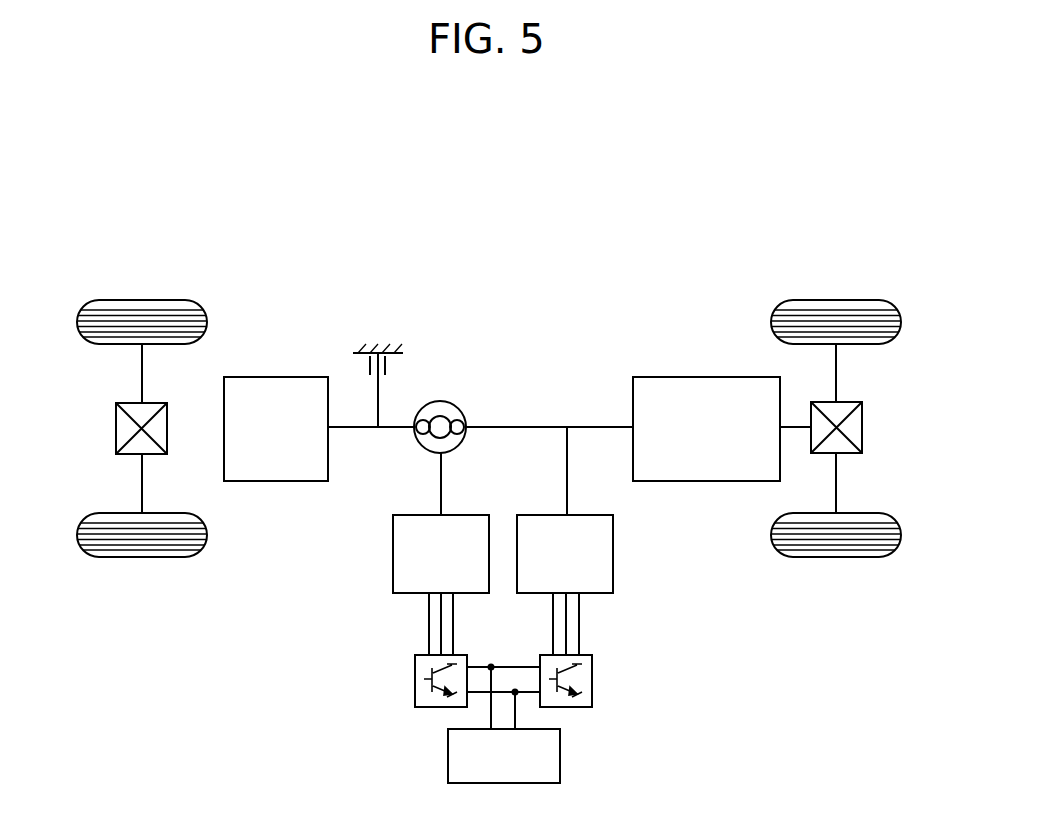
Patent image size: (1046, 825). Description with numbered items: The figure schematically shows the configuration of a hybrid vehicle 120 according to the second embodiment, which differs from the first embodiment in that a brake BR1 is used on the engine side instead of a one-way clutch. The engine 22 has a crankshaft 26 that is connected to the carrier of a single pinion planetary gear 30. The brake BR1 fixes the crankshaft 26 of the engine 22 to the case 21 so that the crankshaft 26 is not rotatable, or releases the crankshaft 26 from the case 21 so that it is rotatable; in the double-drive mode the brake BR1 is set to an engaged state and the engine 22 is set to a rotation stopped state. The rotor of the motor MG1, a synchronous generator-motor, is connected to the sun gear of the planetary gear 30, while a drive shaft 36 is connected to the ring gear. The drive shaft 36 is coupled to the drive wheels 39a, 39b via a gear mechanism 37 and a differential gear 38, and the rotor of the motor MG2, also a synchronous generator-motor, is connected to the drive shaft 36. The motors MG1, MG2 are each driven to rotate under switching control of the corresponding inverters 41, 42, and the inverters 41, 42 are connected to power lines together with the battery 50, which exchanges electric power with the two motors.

The hybrid vehicle 120 is at (558, 280).
The case 21 is at (356, 366).
The brake BR1 is at (388, 368).
The engine 22 is at (277, 377).
The crankshaft 26 is at (357, 429).
The planetary gear 30 is at (440, 401).
The drive shaft 36 is at (590, 427).
The gear mechanism 37 is at (723, 377).
The differential gear 38 is at (848, 402).
The drive wheel 39a is at (836, 300).
The drive wheel 39b is at (834, 557).
The motor MG1 is at (465, 515).
The motor MG2 is at (589, 515).
The inverter 41 is at (462, 654).
The inverter 42 is at (590, 654).
The battery 50 is at (561, 755).